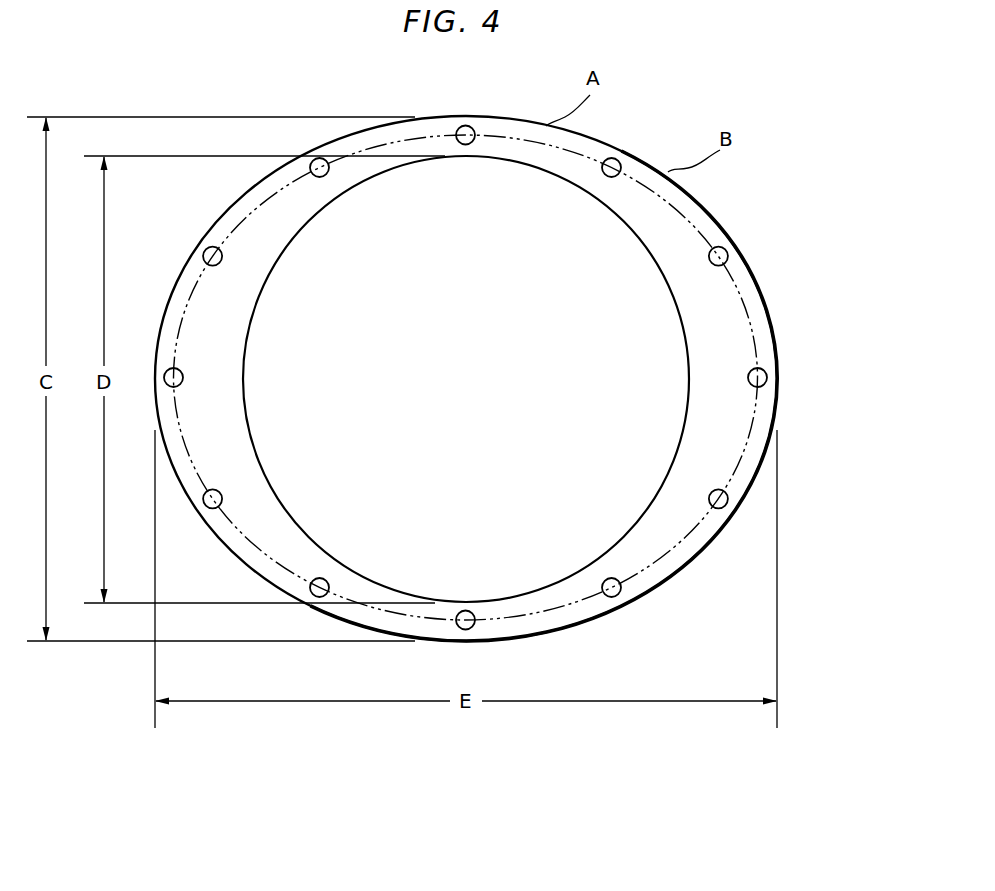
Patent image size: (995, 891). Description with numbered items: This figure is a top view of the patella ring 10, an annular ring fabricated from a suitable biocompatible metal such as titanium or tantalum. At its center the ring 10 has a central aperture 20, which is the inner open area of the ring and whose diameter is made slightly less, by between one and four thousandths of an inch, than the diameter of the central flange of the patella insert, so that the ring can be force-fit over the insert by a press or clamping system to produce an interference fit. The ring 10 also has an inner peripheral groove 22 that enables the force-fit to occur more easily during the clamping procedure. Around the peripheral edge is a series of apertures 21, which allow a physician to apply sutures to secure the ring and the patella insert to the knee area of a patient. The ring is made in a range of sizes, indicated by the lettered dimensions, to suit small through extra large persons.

The patella ring 10 is at (706, 214).
The central aperture 20 is at (298, 257).
The apertures 21 is at (466, 125).
The inner peripheral groove 22 is at (731, 299).